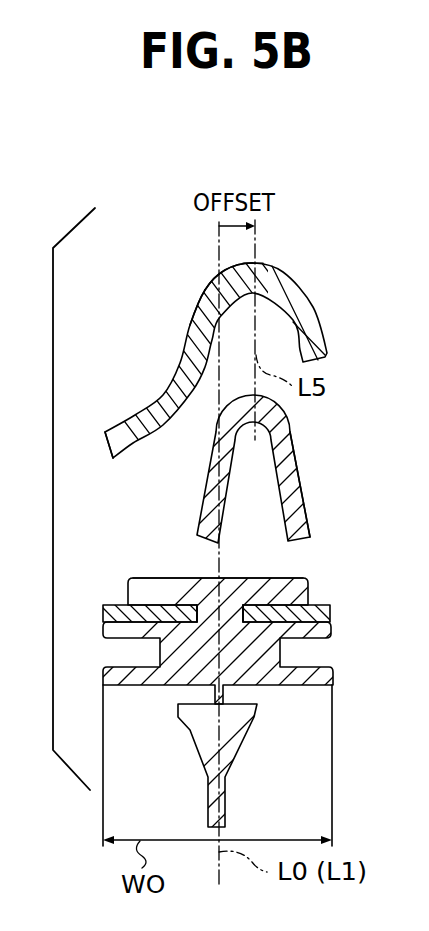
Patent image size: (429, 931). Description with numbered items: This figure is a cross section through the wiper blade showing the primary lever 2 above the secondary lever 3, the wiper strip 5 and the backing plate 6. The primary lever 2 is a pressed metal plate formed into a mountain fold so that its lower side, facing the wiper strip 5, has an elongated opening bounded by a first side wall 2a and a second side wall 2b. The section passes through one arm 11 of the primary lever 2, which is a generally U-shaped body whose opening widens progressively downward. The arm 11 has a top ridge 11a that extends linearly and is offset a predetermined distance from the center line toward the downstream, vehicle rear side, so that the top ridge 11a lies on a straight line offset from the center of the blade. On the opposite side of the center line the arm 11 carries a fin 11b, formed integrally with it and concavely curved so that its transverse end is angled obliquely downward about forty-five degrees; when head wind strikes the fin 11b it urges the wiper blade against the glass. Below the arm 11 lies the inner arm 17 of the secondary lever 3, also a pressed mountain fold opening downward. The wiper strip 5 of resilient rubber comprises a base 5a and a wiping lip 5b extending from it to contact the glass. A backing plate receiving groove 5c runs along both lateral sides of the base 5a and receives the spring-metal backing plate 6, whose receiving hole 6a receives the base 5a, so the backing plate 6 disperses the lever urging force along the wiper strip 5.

The primary lever 2 is at (312, 300).
The first side wall 2a is at (324, 327).
The second side wall 2b is at (188, 330).
The secondary lever 3 is at (293, 421).
The wiper strip 5 is at (290, 578).
The base 5a is at (133, 579).
The wiping lip 5b is at (226, 760).
The backing plate receiving groove 5c is at (254, 596).
The backing plate 6 is at (330, 611).
The receiving hole 6a is at (198, 598).
The arm 11 is at (204, 288).
The top ridge 11a is at (258, 265).
The fin 11b is at (163, 391).
The inner arm 17 is at (298, 484).